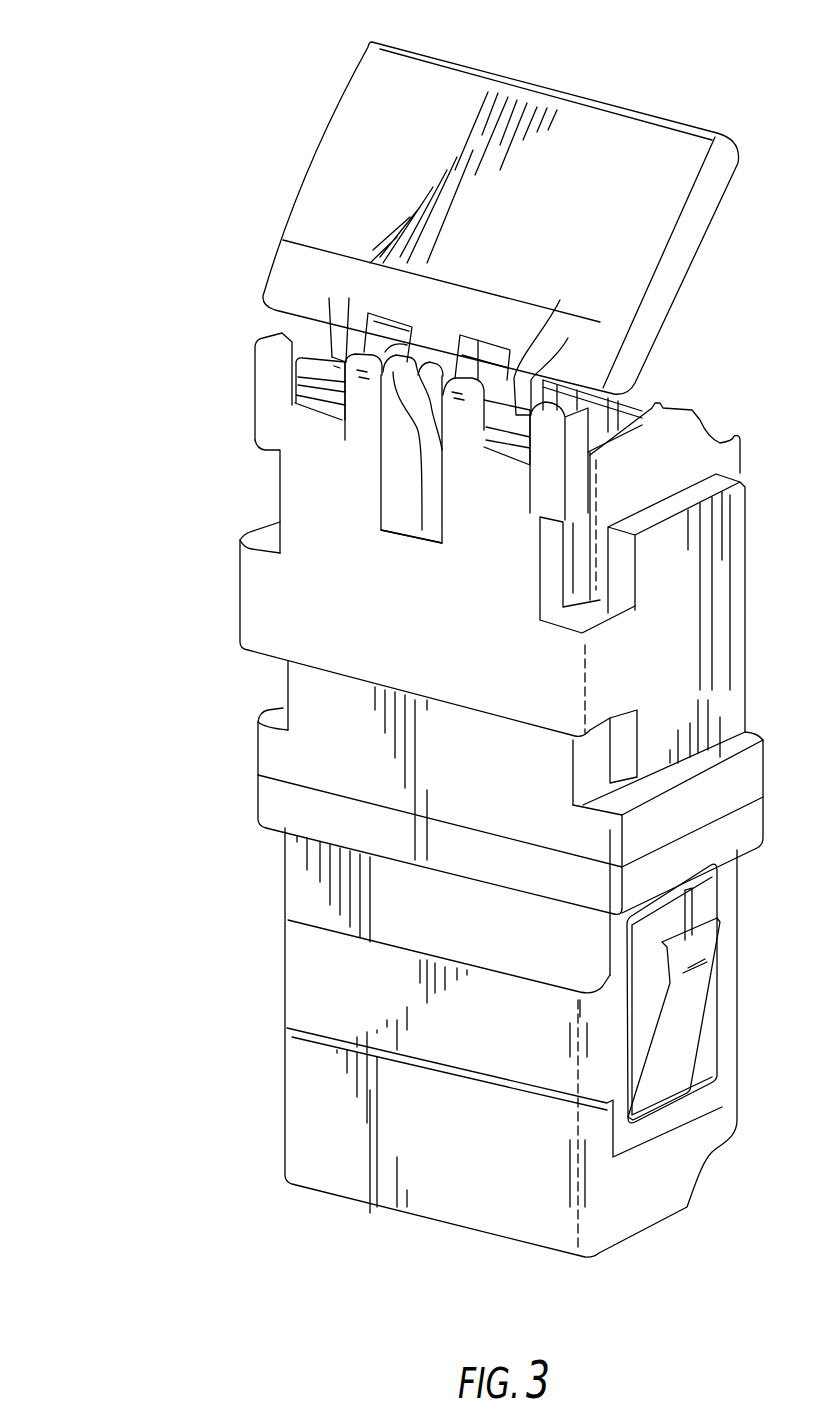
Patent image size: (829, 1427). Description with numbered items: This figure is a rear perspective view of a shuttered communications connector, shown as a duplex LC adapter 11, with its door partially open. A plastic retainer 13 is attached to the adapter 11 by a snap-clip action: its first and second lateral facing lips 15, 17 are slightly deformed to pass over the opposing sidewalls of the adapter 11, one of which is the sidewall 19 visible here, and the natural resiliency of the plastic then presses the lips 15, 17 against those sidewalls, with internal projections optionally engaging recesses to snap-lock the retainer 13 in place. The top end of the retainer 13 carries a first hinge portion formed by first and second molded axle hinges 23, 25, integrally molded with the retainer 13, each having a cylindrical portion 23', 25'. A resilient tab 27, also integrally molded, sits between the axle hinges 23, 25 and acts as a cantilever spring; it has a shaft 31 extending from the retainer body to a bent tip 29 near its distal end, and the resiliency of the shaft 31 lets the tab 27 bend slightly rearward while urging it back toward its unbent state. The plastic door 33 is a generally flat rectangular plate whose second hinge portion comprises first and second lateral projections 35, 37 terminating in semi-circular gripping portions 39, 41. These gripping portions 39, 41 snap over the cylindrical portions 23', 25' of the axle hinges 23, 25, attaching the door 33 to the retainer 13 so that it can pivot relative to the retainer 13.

The duplex LC adapter 11 is at (135, 650).
The plastic retainer 13 is at (412, 651).
The first lateral facing lip 15 is at (677, 656).
The second lateral facing lip 17 is at (270, 535).
The sidewall 19 is at (668, 486).
The first axle hinge 23 is at (515, 485).
The cylindrical portion of first axle hinge 23' is at (548, 380).
The second axle hinge 25 is at (289, 402).
The cylindrical portion of second axle hinge 25' is at (349, 284).
The resilient tab 27 is at (415, 458).
The bent tip 29 is at (412, 382).
The shaft 31 is at (443, 538).
The plastic door 33 is at (560, 221).
The first lateral projection 35 is at (540, 330).
The second lateral projection 37 is at (331, 332).
The gripping portion 39 is at (505, 437).
The gripping portion 41 is at (294, 407).